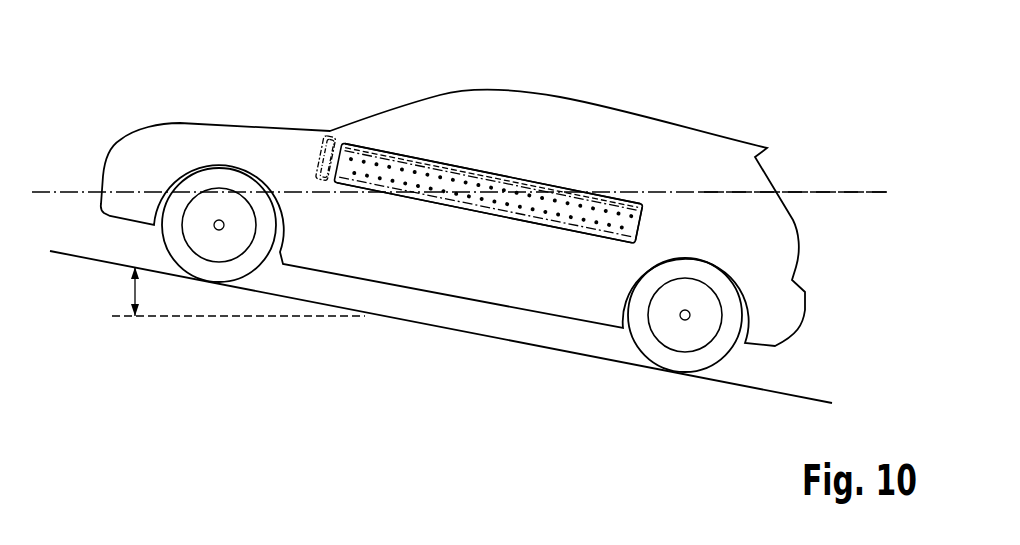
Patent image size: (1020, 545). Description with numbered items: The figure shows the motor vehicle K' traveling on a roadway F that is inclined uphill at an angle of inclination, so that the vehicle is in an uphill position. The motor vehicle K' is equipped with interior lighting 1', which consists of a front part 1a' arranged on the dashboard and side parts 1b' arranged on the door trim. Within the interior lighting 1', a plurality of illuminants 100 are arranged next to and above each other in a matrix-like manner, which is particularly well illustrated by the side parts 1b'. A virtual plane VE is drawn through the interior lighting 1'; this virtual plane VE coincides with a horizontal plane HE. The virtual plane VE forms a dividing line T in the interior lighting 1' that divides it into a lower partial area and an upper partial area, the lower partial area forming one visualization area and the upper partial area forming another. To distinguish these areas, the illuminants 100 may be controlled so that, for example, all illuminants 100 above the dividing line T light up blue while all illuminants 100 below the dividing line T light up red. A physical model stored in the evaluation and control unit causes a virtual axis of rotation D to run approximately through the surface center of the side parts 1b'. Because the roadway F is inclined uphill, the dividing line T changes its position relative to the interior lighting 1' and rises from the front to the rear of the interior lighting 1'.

The motor vehicle K' is at (453, 194).
The interior lighting 1' is at (488, 172).
The front part of the interior lighting 1a' is at (289, 130).
The side parts of the interior lighting 1b' is at (602, 177).
The illuminants 100 is at (332, 153).
The dividing line T is at (452, 190).
The virtual axis of rotation D is at (485, 200).
The roadway F is at (605, 360).
The virtual plane VE is at (57, 191).
The horizontal plane HE is at (850, 191).